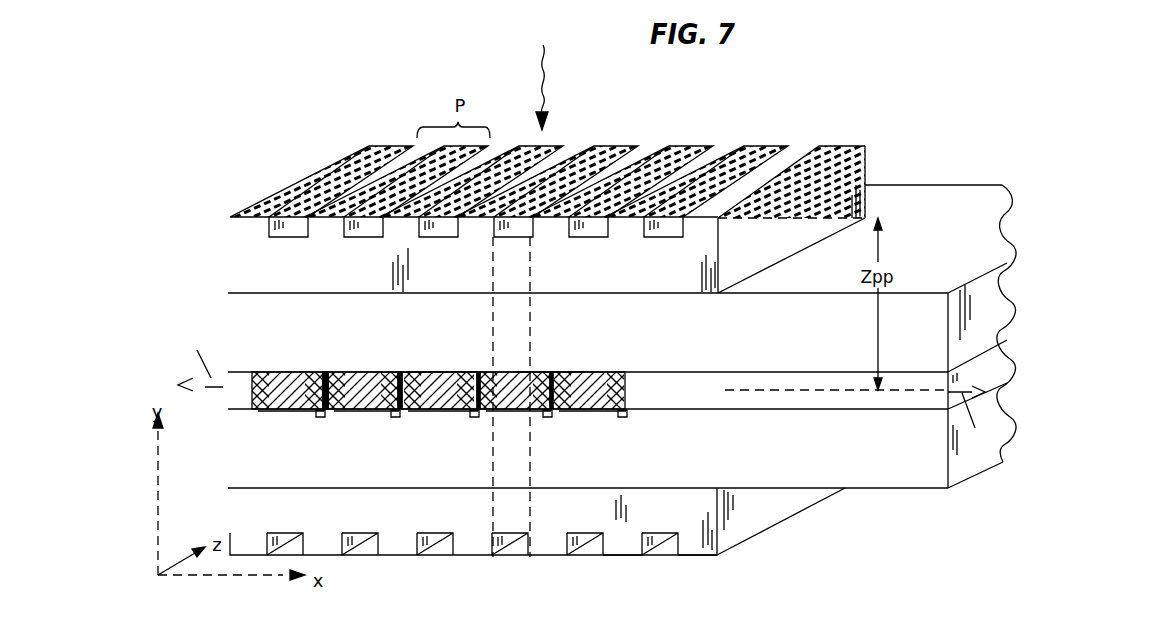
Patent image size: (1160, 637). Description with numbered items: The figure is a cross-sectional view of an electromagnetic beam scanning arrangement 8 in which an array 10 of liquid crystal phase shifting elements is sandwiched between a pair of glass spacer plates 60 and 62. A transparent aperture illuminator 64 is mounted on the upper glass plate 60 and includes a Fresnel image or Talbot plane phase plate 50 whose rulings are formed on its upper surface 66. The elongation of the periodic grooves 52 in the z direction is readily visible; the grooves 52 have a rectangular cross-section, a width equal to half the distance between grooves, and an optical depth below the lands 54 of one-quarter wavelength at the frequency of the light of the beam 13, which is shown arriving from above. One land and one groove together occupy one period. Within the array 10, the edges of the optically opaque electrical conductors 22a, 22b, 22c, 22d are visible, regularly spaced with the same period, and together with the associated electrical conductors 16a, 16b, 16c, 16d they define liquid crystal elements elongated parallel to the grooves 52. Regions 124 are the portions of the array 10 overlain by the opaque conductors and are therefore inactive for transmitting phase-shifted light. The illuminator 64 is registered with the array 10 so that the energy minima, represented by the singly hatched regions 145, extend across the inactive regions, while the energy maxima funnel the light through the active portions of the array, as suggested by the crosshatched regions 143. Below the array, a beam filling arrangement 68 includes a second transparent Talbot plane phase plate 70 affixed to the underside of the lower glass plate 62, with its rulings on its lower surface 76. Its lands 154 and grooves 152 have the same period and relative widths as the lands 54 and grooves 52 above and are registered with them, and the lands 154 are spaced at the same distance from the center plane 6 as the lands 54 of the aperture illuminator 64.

The beam scanning arrangement 8 is at (833, 108).
The array of liquid crystal phase shifting elements 10 is at (905, 402).
The beam 13 is at (550, 63).
The Fresnel image phase plate or Talbot plane phase plate 50 is at (857, 173).
The grooves 52 is at (648, 147).
The lands 54 is at (762, 147).
The glass spacer plate 60 is at (955, 185).
The glass spacer plate 62 is at (924, 482).
The transparent aperture illuminator 64 is at (773, 128).
The upper surface 66 is at (842, 147).
The beam filling arrangement 68 is at (404, 560).
The transparent Talbot plane phase plate 70 is at (773, 512).
The lower surface 76 is at (697, 556).
The grooves 152 is at (580, 542).
The lands 154 is at (620, 556).
The center plane 6 is at (582, 390).
The regions 124 is at (478, 371).
The crosshatched regions 143 is at (585, 371).
The singly hatched regions 145 is at (392, 371).
The electrical conductor 16a is at (592, 417).
The electrical conductor 16b is at (512, 417).
The electrical conductor 16c is at (442, 416).
The electrical conductor 16d is at (358, 416).
The optically opaque electrical conductor 22a is at (625, 415).
The optically opaque electrical conductor 22b is at (547, 417).
The optically opaque electrical conductor 22c is at (475, 417).
The optically opaque electrical conductor 22d is at (398, 420).